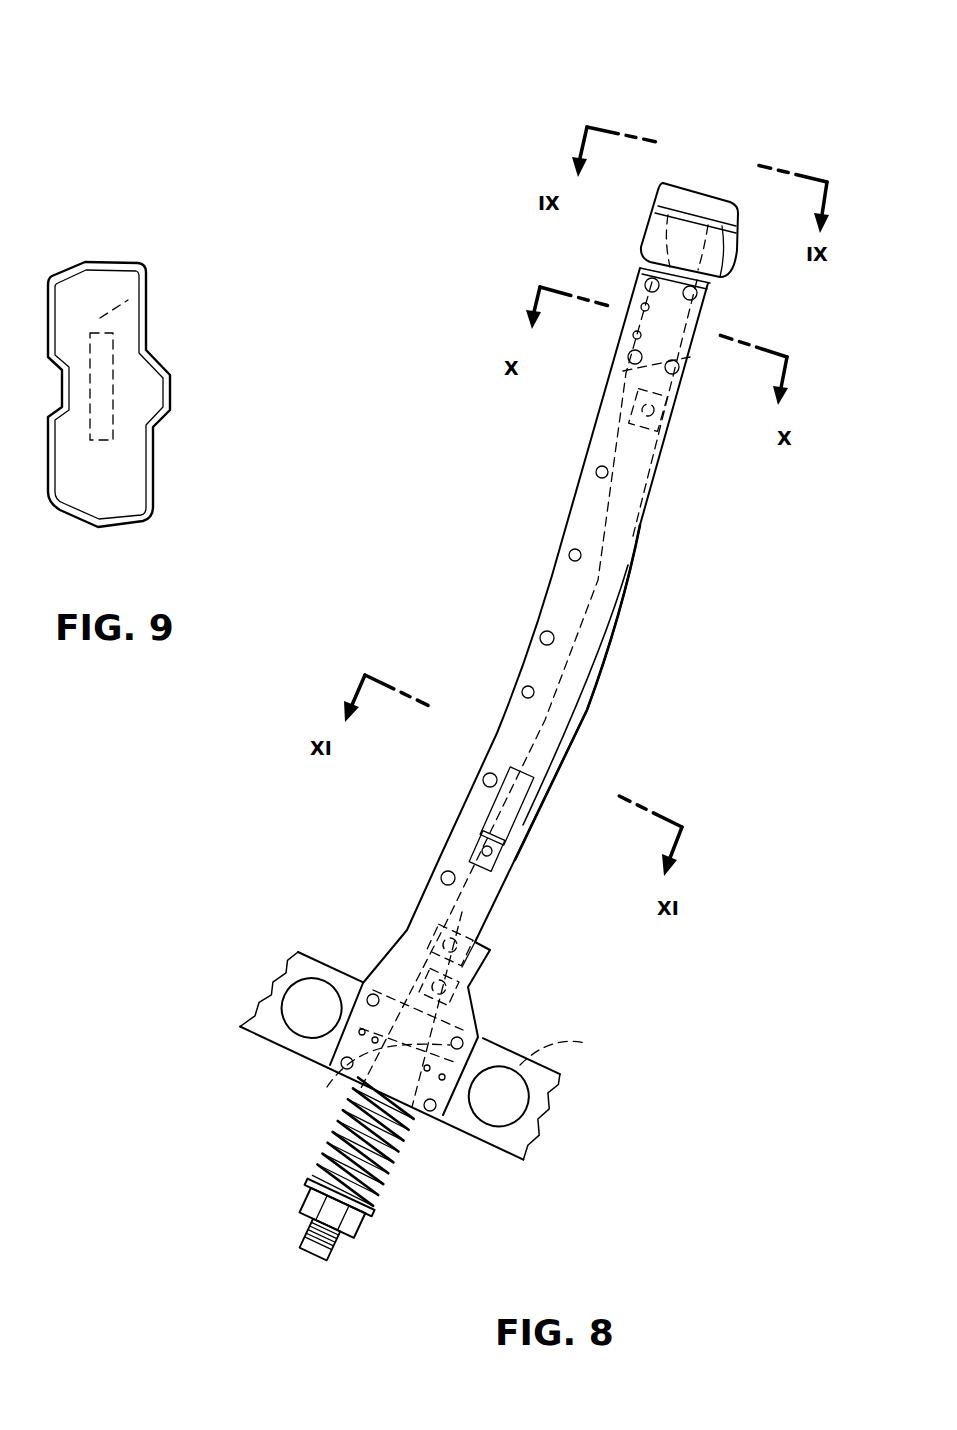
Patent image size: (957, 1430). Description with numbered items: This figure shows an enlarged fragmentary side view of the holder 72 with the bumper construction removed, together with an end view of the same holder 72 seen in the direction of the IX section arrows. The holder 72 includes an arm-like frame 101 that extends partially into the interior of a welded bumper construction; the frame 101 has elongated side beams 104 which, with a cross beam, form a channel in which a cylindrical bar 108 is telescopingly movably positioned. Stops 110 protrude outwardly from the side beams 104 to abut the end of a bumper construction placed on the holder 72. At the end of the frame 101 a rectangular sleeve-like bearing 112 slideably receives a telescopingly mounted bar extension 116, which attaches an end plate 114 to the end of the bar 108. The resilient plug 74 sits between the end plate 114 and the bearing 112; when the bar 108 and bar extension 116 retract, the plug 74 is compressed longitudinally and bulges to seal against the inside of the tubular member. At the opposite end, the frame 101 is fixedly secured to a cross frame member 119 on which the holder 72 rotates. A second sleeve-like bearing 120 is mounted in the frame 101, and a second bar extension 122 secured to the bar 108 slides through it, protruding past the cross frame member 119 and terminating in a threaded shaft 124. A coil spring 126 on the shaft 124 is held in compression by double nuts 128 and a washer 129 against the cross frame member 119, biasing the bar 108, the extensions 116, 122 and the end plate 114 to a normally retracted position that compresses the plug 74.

In FIG. 9, the holder 72 is at (92, 245).
In FIG. 8, the holder 72 is at (552, 99).
In FIG. 9, the plug 74 is at (125, 305).
In FIG. 8, the plug 74 is at (728, 255).
In FIG. 8, the arm-like frame 101 is at (530, 608).
In FIG. 8, the side beams 104 is at (593, 510).
In FIG. 8, the cylindrical bar 108 is at (597, 673).
In FIG. 8, the stops 110 is at (495, 830).
In FIG. 8, the sleeve-like bearing 112 is at (637, 320).
In FIG. 9, the end plate 114 is at (113, 285).
In FIG. 8, the end plate 114 is at (702, 190).
In FIG. 9, the bar extension 116 is at (113, 345).
In FIG. 8, the bar extension 116 is at (672, 326).
In FIG. 8, the cross frame member 119 is at (530, 1063).
In FIG. 8, the second sleeve-like bearing 120 is at (480, 1043).
In FIG. 8, the second bar extension 122 is at (327, 1087).
In FIG. 8, the threaded shaft 124 is at (333, 1247).
In FIG. 8, the coil spring 126 is at (383, 1153).
In FIG. 8, the double nuts 128 is at (303, 1197).
In FIG. 8, the washer 129 is at (310, 1177).